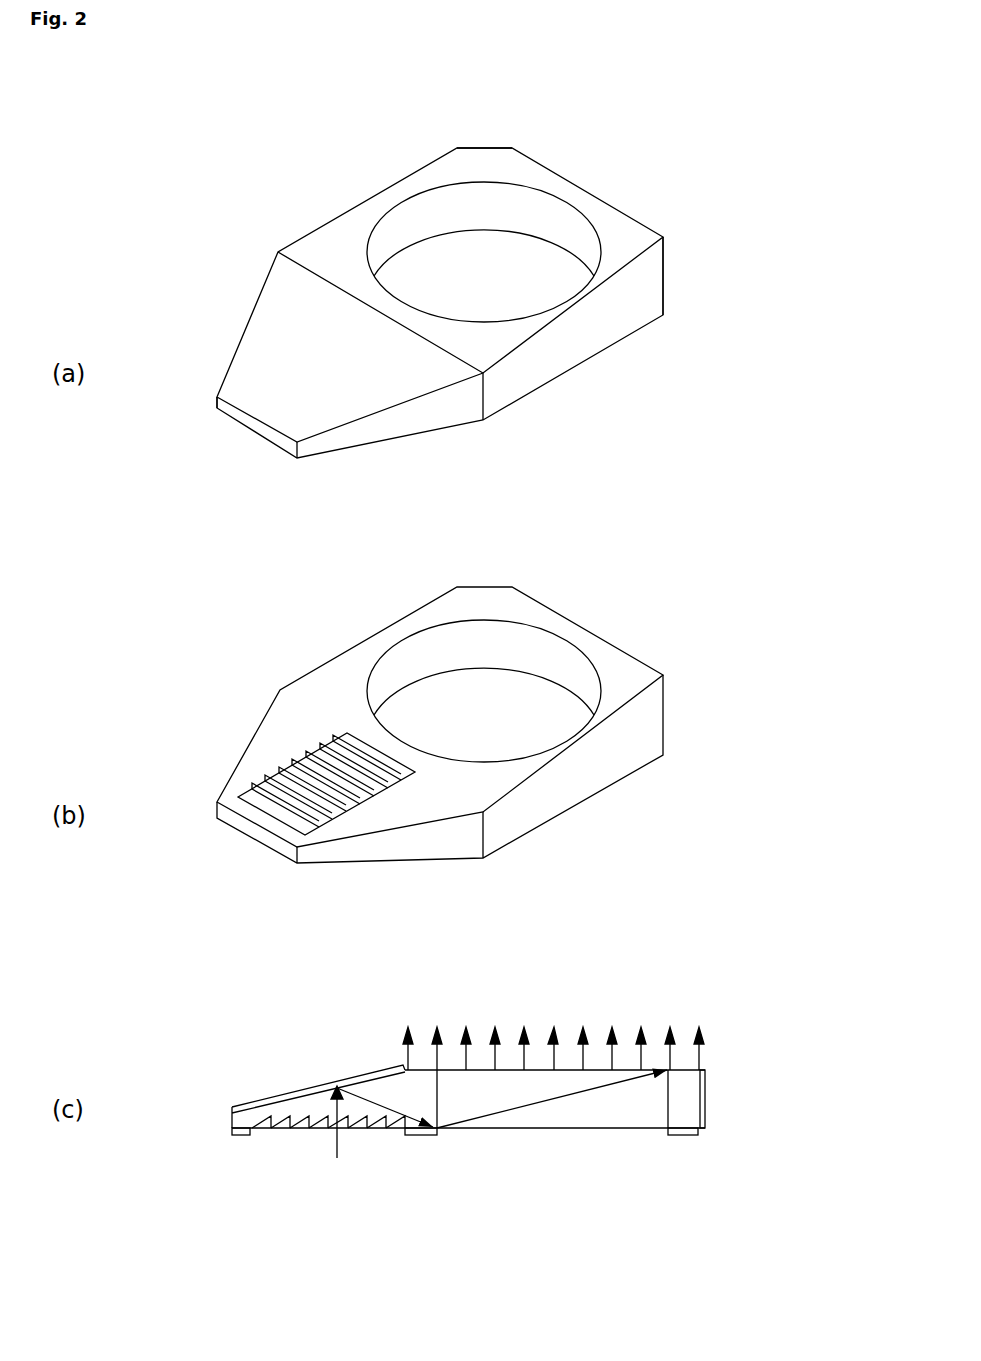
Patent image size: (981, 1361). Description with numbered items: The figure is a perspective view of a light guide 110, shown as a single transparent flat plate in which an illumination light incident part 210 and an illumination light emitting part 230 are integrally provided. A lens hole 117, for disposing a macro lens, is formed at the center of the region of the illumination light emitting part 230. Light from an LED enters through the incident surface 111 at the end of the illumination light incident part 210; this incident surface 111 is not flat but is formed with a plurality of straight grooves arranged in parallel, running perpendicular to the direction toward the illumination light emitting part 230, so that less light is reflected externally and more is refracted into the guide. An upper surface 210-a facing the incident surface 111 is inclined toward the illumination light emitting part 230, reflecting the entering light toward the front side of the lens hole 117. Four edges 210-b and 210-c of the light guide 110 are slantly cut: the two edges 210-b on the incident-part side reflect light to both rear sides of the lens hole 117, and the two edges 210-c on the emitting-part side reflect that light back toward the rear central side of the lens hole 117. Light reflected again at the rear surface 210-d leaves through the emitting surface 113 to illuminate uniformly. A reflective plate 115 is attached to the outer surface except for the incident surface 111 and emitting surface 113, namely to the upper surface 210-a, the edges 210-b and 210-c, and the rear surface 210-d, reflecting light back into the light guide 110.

The light guide 110 is at (628, 350).
The incident surface 111 is at (283, 807).
The emitting surface 113 is at (615, 223).
The reflective plate 115 is at (232, 1132).
The lens hole 117 is at (518, 211).
The illumination light incident part 210 is at (245, 305).
The upper surface 210-a is at (267, 393).
The edges 210-b is at (395, 425).
The edges 210-c is at (483, 148).
The rear surface 210-d is at (528, 770).
The illumination light emitting part 230 is at (385, 183).